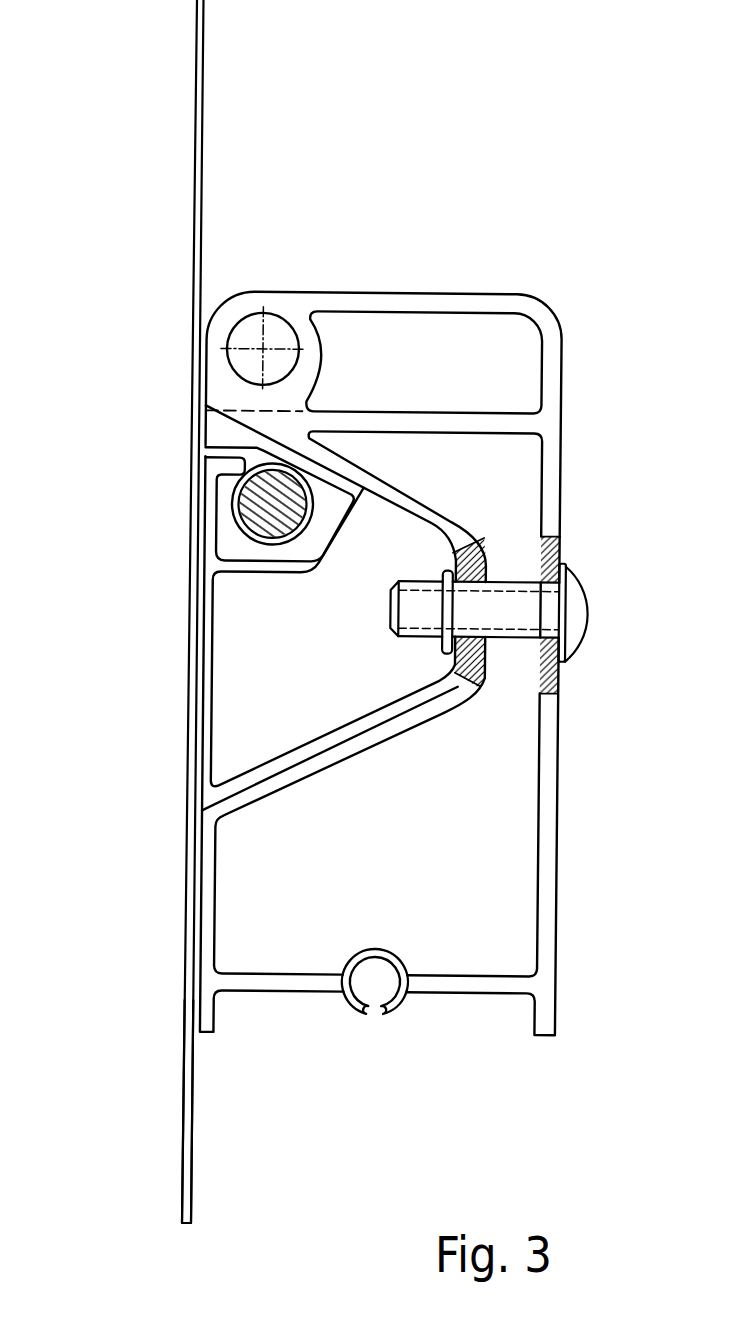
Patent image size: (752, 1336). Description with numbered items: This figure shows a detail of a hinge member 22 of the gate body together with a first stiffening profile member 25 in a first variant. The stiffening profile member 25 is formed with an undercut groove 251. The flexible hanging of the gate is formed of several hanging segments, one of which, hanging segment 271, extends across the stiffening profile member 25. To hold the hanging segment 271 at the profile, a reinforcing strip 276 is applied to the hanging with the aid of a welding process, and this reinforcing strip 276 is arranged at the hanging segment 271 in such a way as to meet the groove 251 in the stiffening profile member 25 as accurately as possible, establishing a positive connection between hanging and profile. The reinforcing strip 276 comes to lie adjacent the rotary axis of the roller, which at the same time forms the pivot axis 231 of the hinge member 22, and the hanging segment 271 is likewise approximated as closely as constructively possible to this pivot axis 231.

The hinge member 22 is at (545, 821).
The pivot axis 231 is at (266, 347).
The undercut groove 251 is at (270, 553).
The reinforcing strip 276 is at (218, 497).
The first stiffening profile member 25 is at (189, 666).
The hanging segment 271 is at (188, 1072).